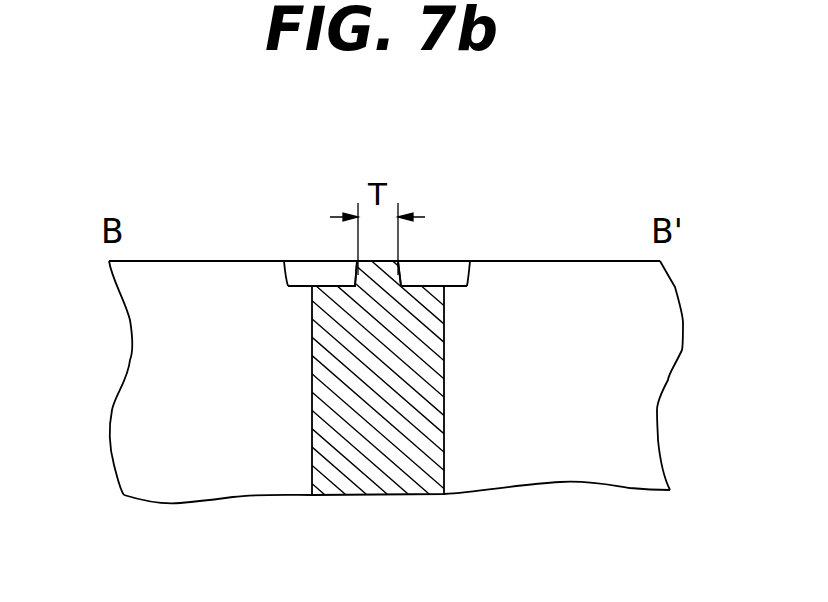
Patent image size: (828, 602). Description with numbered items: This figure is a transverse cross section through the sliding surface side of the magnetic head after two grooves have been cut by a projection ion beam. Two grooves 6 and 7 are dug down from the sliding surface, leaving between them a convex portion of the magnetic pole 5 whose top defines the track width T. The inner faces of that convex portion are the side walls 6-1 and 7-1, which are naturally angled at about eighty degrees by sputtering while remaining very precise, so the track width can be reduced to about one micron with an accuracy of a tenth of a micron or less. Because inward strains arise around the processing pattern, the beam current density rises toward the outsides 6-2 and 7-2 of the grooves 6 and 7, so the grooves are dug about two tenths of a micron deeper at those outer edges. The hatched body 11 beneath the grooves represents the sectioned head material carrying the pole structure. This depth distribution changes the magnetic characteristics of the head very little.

The magnetic pole 5 is at (386, 263).
The groove 6 is at (489, 257).
The side wall of convex portion 6-1 is at (399, 275).
The outside of groove 6-2 is at (468, 287).
The groove 7 is at (275, 265).
The side wall of convex portion 7-1 is at (352, 262).
The outside of groove 7-2 is at (289, 287).
The substrate 11 is at (430, 408).